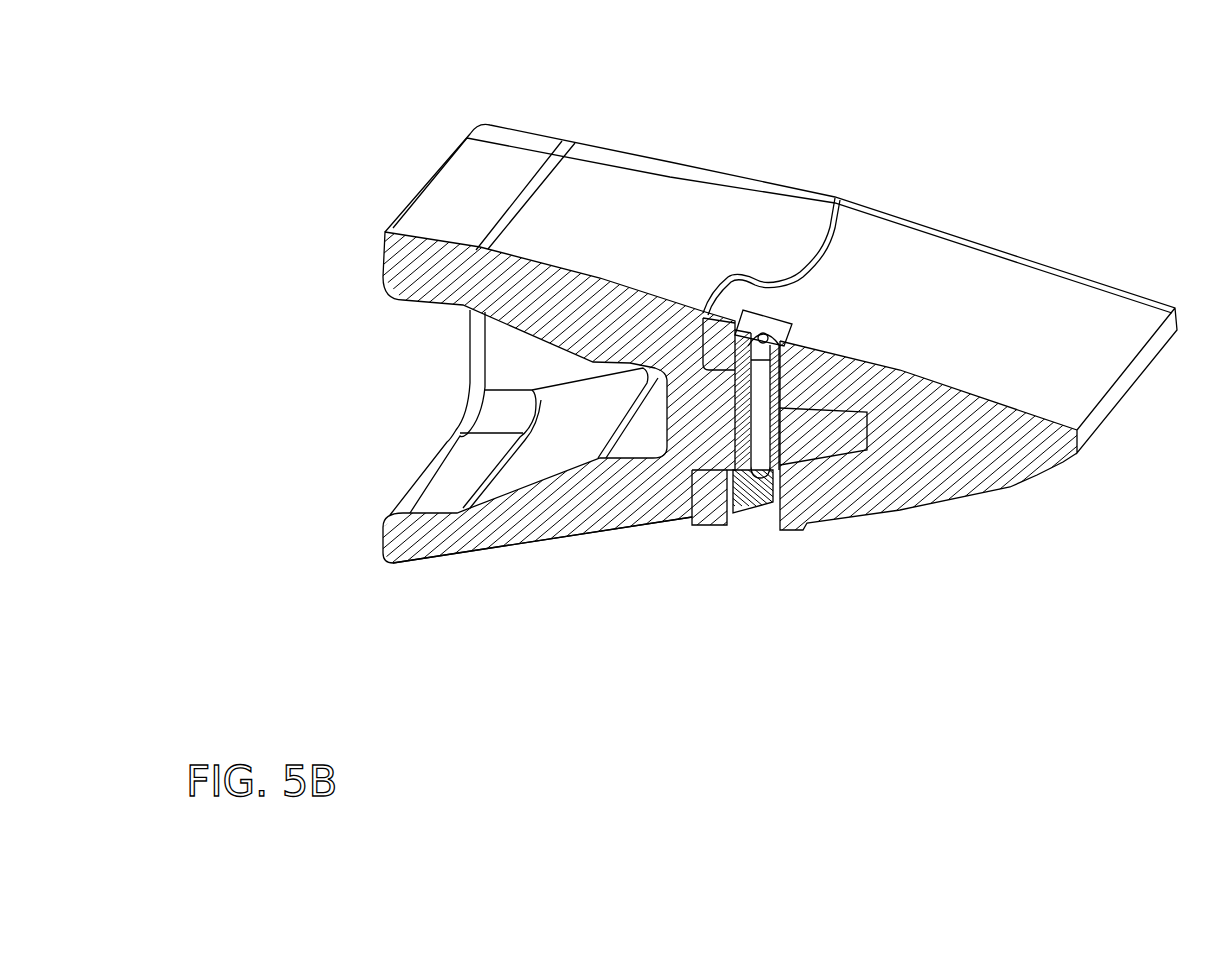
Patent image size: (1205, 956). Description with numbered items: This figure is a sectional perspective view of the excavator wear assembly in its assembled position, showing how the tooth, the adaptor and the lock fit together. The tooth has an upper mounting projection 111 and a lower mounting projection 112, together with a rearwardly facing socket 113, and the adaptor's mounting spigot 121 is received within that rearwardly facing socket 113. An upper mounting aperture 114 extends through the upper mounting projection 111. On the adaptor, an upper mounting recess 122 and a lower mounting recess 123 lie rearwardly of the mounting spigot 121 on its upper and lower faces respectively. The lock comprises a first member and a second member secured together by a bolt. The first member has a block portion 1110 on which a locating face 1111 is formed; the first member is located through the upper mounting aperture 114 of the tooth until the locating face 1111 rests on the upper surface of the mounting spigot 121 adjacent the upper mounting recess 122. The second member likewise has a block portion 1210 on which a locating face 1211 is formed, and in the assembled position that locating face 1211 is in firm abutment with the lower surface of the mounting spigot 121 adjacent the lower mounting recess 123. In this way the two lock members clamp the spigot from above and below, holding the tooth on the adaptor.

The upper mounting projection 111 is at (735, 297).
The block portion 1110 is at (749, 313).
The rearwardly facing socket 113 is at (790, 409).
The upper mounting aperture 114 is at (782, 322).
The upper mounting recess 122 is at (718, 296).
The mounting spigot 121 is at (688, 503).
The lower mounting recess 123 is at (663, 520).
The lower mounting projection 112 is at (708, 520).
The locating face 1211 is at (727, 520).
The block portion 1210 is at (767, 520).
The locating face 1111 is at (705, 402).